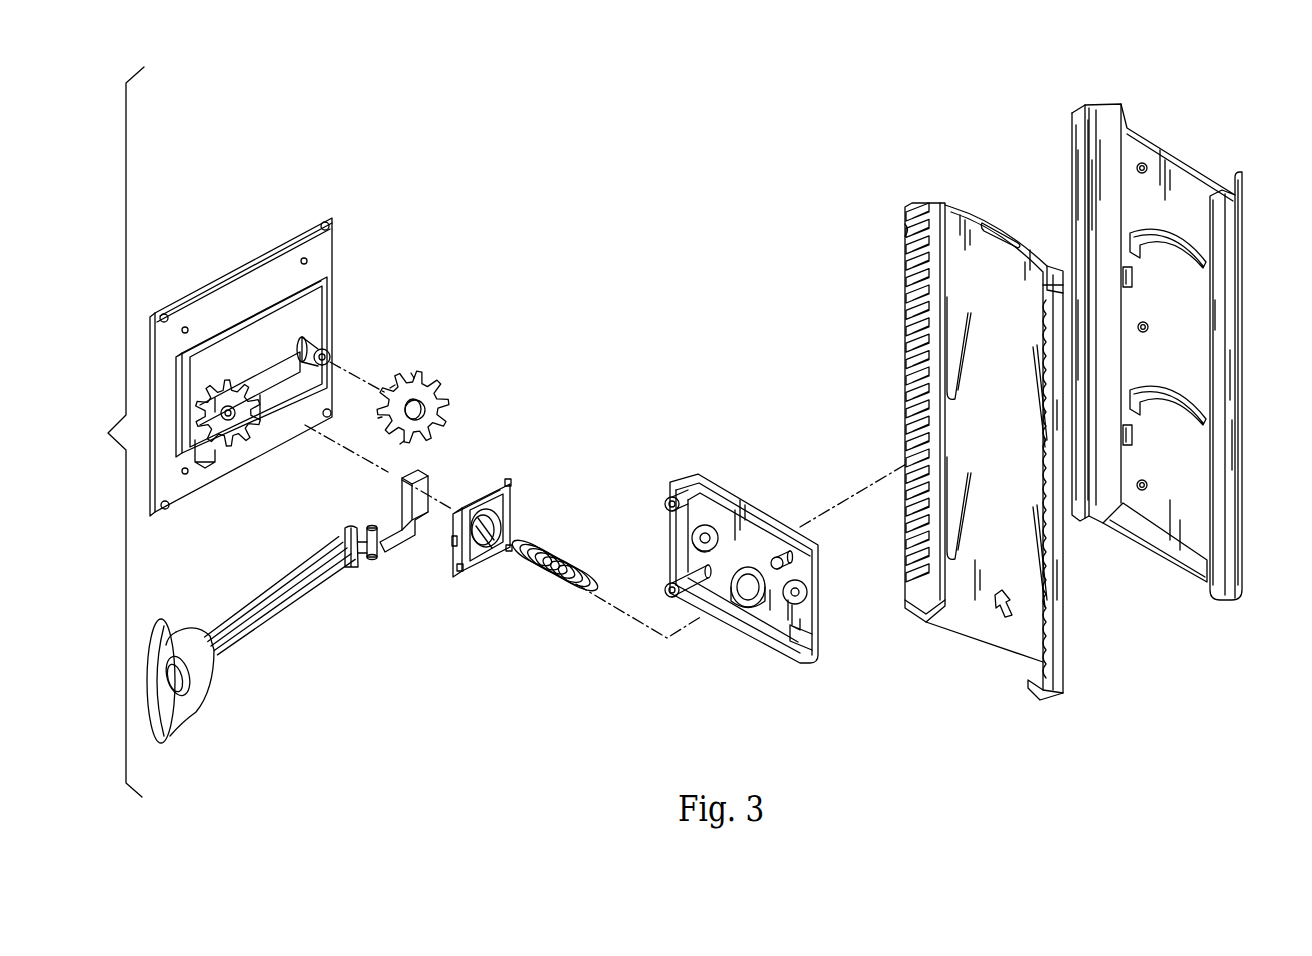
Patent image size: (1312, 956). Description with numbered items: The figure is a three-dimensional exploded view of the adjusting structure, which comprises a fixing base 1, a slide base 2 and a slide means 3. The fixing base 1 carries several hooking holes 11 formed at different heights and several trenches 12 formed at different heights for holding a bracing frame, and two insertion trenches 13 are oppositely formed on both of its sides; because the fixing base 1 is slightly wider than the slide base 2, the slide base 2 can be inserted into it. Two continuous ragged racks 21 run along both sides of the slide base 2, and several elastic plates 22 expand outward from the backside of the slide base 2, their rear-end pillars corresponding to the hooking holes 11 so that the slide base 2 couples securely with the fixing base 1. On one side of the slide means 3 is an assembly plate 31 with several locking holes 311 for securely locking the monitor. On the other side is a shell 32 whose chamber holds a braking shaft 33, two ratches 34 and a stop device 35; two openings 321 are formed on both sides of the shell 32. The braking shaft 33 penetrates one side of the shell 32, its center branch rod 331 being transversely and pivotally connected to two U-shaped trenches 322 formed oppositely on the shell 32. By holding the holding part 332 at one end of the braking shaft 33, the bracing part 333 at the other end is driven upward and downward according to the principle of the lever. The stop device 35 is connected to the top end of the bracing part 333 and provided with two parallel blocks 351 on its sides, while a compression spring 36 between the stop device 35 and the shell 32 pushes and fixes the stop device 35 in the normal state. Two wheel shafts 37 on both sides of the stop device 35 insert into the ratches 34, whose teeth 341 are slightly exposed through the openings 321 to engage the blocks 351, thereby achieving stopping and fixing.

The fixing base 1 is at (1240, 366).
The hooking holes 11 is at (1132, 287).
The trenches 12 is at (1200, 260).
The insertion trenches 13 is at (1083, 113).
The slide base 2 is at (1058, 631).
The continuous ragged racks 21 is at (906, 355).
The elastic plates 22 is at (958, 380).
The slide means 3 is at (484, 428).
The assembly plate 31 is at (268, 248).
The locking holes 311 is at (325, 226).
The shell 32 is at (318, 278).
The openings 321 is at (682, 533).
The U-shaped trenches 322 is at (212, 456).
The braking shaft 33 is at (282, 613).
The center branch rod 331 is at (367, 526).
The holding part 332 is at (190, 698).
The bracing part 333 is at (425, 478).
The ratches 34 is at (438, 384).
The teeth 341 is at (413, 377).
The stop device 35 is at (509, 489).
The blocks 351 is at (512, 503).
The compression spring 36 is at (540, 583).
The wheel shafts 37 is at (328, 352).